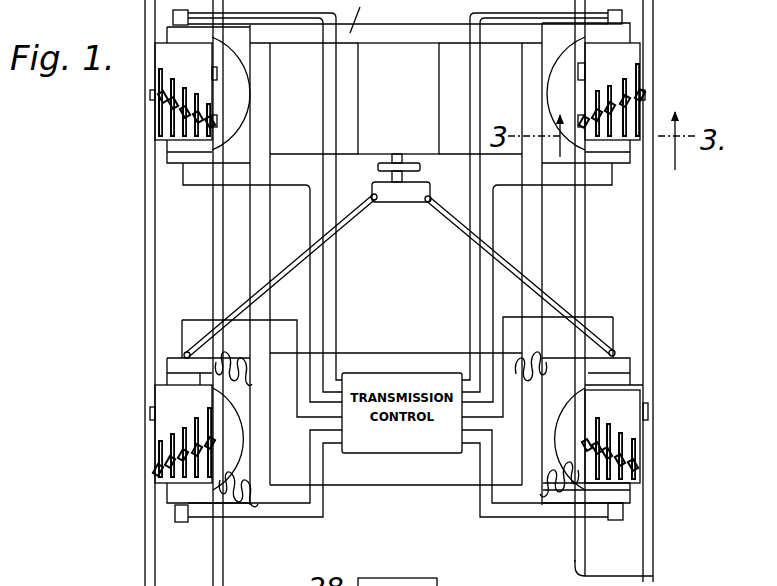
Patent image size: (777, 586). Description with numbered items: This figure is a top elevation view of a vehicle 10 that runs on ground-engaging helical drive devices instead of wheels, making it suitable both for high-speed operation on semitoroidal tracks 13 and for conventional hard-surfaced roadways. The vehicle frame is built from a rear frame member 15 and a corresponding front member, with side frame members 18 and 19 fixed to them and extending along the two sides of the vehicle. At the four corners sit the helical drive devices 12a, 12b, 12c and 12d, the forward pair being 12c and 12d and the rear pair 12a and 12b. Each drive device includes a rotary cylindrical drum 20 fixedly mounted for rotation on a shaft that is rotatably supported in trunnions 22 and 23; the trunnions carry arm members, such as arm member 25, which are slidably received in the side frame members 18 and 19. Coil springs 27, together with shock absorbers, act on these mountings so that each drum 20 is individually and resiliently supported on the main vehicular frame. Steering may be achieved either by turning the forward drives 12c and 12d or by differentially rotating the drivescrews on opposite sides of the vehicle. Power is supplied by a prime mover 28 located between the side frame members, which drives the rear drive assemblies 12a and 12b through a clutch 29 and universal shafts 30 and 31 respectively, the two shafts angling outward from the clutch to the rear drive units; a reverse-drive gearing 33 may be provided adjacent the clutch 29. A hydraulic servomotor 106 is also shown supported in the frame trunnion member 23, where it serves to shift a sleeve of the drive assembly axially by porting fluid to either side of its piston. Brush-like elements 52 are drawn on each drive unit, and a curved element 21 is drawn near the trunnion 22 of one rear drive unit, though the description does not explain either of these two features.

The vehicle 10 is at (108, 506).
The rear helical drive device 12a is at (148, 441).
The rear helical drive device 12b is at (645, 433).
The forward helical drive device 12c is at (138, 134).
The forward helical drive device 12d is at (658, 60).
The semitoroidal track 13 is at (175, 283).
The rear frame member 15 is at (368, 495).
The side frame member 18 is at (257, 244).
The side frame member 19 is at (535, 217).
The rotary cylindrical drum 20 is at (648, 400).
The pivot bracket 21 is at (593, 367).
The trunnion 22 is at (628, 364).
The trunnion 23 is at (622, 496).
The arm member 25 is at (587, 500).
The coil spring 27 is at (540, 505).
The prime mover 28 is at (407, 50).
The clutch 29 is at (425, 147).
The universal shaft 30 is at (349, 228).
The universal shaft 31 is at (460, 230).
The reverse-drive gearing 33 is at (397, 200).
The brush elements 52 is at (160, 99).
The hydraulic servomotor 106 is at (617, 513).